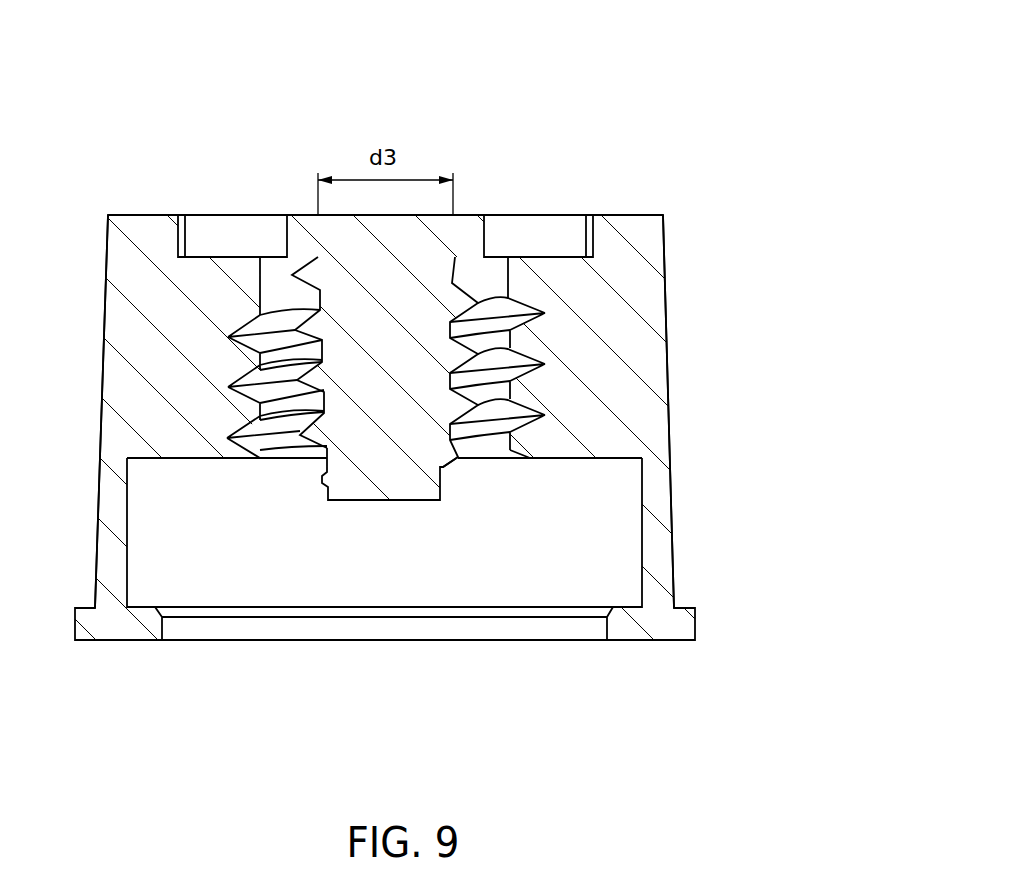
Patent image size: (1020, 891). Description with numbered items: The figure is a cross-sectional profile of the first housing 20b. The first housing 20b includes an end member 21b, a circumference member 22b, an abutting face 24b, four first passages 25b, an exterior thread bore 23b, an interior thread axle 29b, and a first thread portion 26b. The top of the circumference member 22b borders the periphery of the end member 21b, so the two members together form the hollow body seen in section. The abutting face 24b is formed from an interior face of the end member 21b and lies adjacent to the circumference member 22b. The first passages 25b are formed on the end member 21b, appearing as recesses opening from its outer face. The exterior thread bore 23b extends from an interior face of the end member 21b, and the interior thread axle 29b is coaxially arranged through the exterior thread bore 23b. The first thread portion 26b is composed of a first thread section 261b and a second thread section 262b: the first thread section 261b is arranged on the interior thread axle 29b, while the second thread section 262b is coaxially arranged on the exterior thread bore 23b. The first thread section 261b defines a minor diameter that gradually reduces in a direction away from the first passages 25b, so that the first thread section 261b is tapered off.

The first housing 20b is at (617, 88).
The end member 21b is at (633, 232).
The circumference member 22b is at (662, 493).
The exterior thread bore 23b is at (273, 458).
The abutting face 24b is at (562, 458).
The first passages 25b is at (532, 232).
The first thread portion 26b is at (229, 258).
The first thread section 261b is at (318, 257).
The second thread section 262b is at (243, 328).
The interior thread axle 29b is at (347, 490).